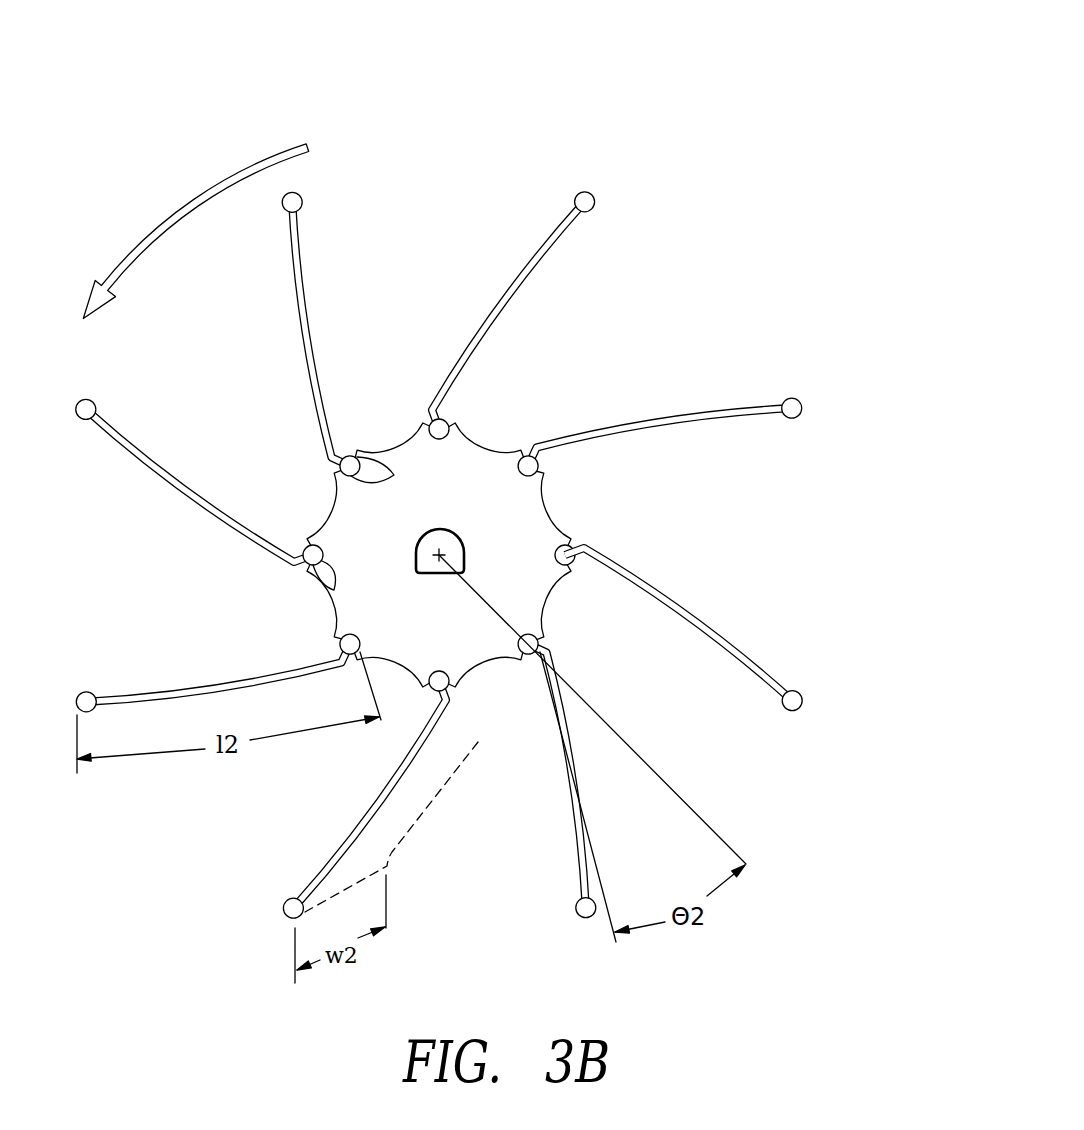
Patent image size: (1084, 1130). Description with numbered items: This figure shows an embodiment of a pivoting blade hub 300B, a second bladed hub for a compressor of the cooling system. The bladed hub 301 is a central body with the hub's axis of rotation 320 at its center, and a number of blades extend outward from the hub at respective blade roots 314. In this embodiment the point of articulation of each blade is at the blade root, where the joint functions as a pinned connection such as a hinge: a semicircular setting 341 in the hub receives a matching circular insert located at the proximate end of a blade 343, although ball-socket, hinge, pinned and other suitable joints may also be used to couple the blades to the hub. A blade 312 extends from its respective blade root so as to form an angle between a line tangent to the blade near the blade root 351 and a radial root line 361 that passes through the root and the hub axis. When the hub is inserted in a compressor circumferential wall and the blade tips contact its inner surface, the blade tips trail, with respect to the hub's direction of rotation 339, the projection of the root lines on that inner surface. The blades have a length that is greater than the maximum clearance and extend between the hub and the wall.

The pivoting blade hub 300B is at (693, 237).
The bladed hub 301 is at (420, 620).
The blade 312 is at (803, 695).
The blade root 314 is at (307, 546).
The hub's axis of rotation 320 is at (435, 545).
The direction of rotation 339 is at (187, 210).
The semicircular setting 341 is at (395, 475).
The blade 343 is at (330, 589).
The line tangent to the blade near the blade root 351 is at (613, 929).
The radial root line 361 is at (716, 832).